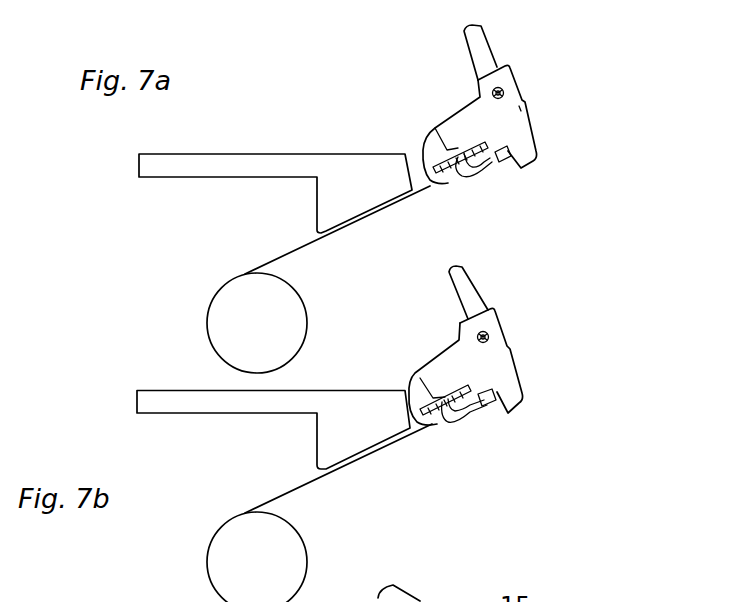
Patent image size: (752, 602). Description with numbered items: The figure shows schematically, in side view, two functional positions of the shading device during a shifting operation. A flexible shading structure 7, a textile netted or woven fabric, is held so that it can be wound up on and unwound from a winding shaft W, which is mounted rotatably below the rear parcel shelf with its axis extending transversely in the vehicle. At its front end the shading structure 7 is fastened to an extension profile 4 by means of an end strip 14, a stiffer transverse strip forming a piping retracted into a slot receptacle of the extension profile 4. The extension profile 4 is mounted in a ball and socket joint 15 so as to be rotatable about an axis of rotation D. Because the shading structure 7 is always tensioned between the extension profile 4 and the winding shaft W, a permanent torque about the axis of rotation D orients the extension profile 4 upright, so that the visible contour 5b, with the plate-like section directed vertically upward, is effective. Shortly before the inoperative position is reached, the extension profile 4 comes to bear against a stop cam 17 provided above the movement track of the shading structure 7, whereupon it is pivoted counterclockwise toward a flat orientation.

In FIG. 7A, the extension profile 4 is at (512, 122).
In FIG. 7B, the extension profile 4 is at (553, 391).
In FIG. 7A, the visible contour 5b is at (515, 50).
In FIG. 7A, the shading structure 7 is at (313, 242).
In FIG. 7B, the shading structure 7 is at (305, 485).
In FIG. 7A, the end strip 14 is at (458, 175).
In FIG. 7B, the end strip 14 is at (458, 412).
In FIG. 7A, the ball and socket joint 15 is at (504, 92).
In FIG. 7B, the ball and socket joint 15 is at (489, 336).
In FIG. 7A, the stop cam 17 is at (393, 170).
In FIG. 7B, the stop cam 17 is at (363, 398).
In FIG. 7A, the axis of rotation D is at (513, 110).
In FIG. 7A, the winding shaft W is at (227, 314).
In FIG. 7B, the winding shaft W is at (218, 562).